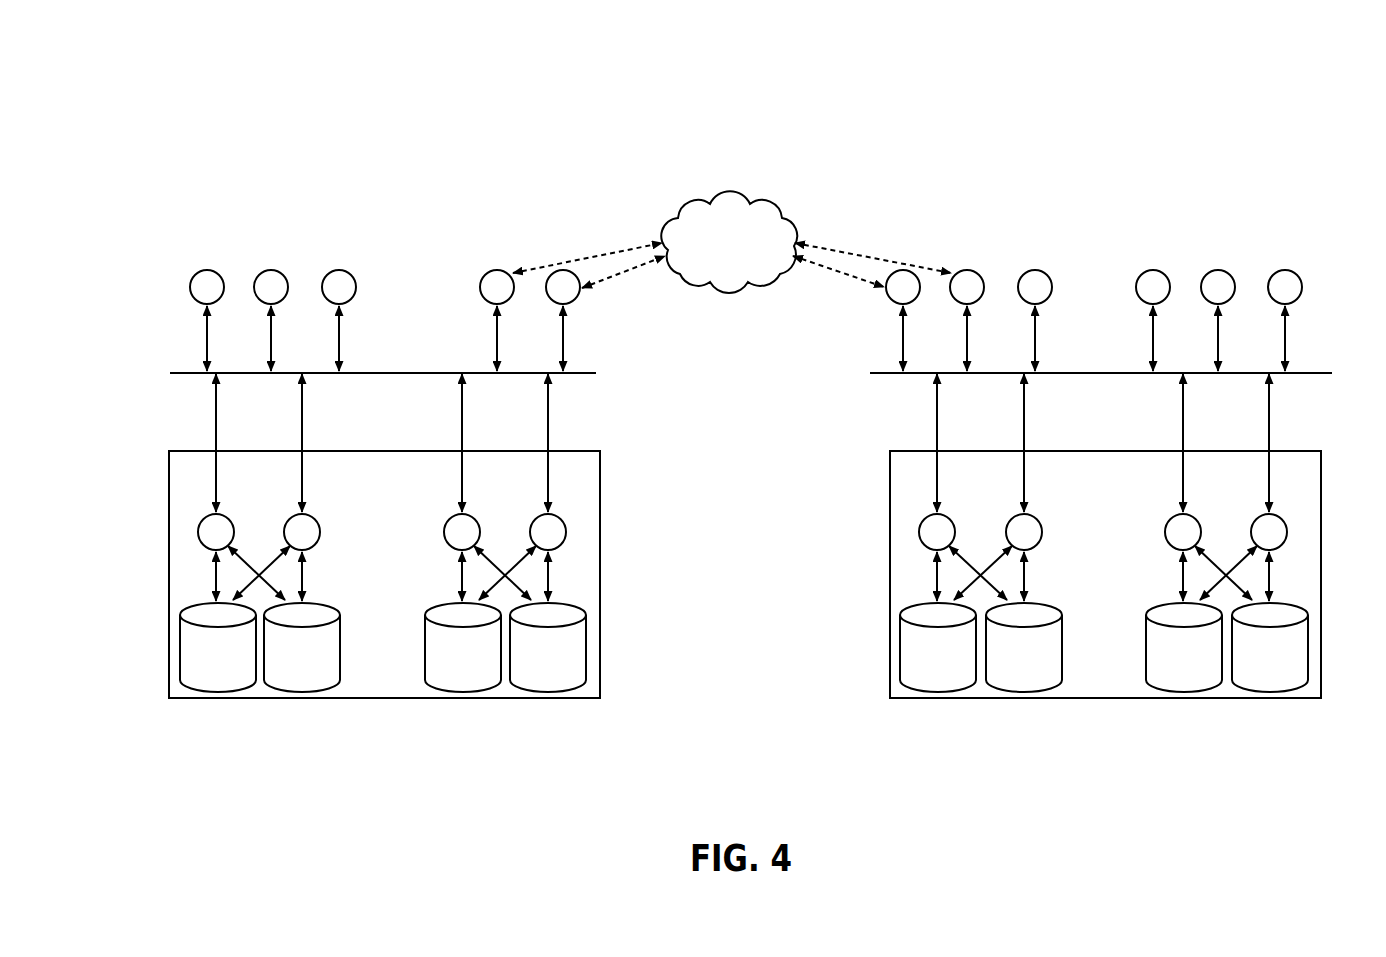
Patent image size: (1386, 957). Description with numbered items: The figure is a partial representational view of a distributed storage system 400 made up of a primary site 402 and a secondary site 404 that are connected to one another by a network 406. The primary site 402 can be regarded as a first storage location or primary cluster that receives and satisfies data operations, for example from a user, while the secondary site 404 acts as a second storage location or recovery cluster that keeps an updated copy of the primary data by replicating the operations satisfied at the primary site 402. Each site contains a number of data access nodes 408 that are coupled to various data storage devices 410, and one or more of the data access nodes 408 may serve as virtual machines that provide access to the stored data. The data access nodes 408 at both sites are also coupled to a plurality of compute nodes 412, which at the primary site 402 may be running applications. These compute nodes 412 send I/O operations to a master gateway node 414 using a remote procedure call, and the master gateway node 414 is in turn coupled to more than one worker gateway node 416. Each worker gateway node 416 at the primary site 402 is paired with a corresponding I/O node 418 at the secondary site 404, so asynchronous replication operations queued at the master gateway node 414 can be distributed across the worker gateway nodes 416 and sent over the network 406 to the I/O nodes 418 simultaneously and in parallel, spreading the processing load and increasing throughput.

The distributed storage system 400 is at (166, 92).
The primary site 402 is at (1199, 699).
The secondary site 404 is at (258, 699).
The network 406 is at (729, 242).
The data access node 408 is at (198, 533).
The data storage device 410 is at (744, 619).
The compute node 412 is at (190, 290).
The master gateway node 414 is at (1035, 270).
The worker gateway node 416 is at (967, 270).
The I/O node 418 is at (490, 270).